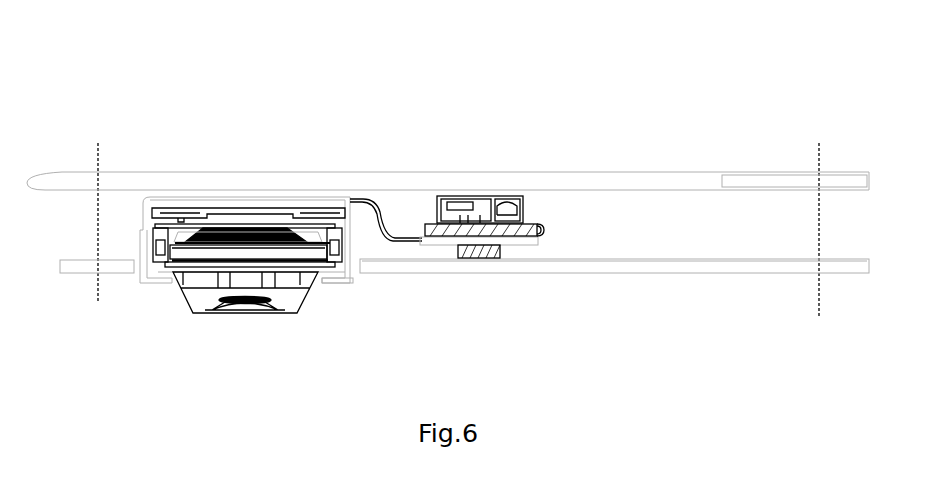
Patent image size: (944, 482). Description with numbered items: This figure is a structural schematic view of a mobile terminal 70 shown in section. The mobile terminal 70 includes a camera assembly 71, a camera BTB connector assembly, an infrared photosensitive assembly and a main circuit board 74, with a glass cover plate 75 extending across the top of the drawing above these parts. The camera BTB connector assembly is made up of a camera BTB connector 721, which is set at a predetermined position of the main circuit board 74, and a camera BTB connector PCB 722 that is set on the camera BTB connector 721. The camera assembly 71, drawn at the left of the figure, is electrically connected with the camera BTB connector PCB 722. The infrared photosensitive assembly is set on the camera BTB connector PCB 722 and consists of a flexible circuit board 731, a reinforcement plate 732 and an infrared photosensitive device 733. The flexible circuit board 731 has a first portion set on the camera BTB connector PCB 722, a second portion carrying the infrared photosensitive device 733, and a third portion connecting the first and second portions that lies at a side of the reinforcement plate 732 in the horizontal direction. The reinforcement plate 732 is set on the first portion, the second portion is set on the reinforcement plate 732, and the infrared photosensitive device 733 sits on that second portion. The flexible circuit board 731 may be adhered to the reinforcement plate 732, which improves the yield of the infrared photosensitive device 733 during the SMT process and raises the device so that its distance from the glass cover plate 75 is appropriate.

The mobile terminal 70 is at (98, 226).
The camera assembly 71 is at (246, 280).
The camera BTB connector 721 is at (465, 248).
The camera BTB connector PCB 722 is at (524, 240).
The flexible circuit board 731 is at (538, 225).
The reinforcement plate 732 is at (430, 225).
The infrared photosensitive device 733 is at (478, 209).
The main circuit board 74 is at (654, 273).
The glass cover plate 75 is at (146, 185).